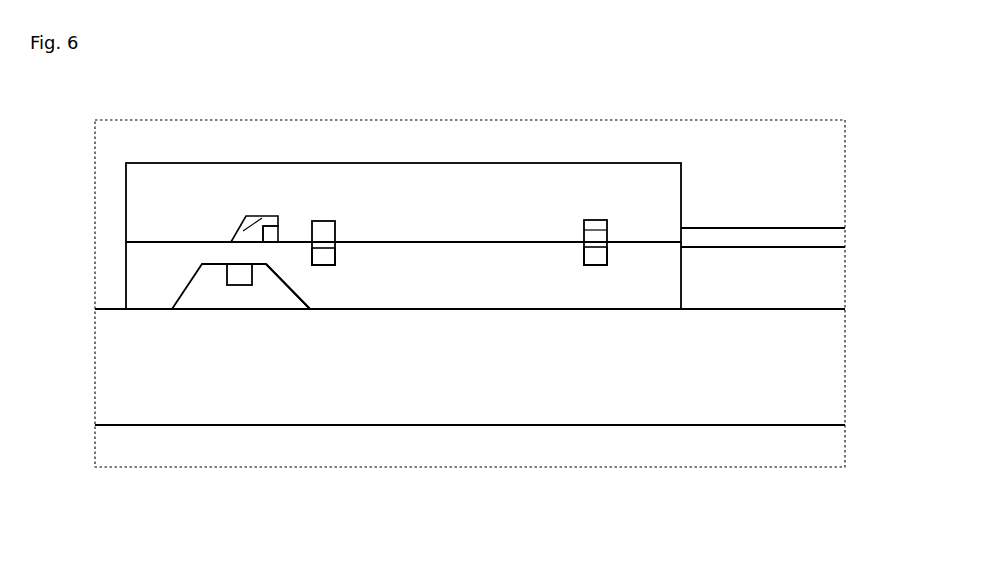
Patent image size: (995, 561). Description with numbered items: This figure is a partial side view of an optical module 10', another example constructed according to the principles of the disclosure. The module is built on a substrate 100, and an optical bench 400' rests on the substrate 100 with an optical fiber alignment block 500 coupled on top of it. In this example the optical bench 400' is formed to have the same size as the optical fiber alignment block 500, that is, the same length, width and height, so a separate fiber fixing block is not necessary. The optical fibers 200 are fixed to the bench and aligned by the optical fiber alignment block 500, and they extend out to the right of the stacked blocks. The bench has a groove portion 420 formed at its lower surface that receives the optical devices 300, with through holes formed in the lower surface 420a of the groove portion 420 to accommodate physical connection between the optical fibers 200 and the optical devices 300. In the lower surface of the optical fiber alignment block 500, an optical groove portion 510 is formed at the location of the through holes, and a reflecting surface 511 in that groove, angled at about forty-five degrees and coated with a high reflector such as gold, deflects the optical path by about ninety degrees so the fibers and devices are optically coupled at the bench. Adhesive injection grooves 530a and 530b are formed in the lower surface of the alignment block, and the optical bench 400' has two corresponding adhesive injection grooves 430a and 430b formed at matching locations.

The optical module 10' is at (443, 270).
The substrate 100 is at (192, 410).
The optical fibers 200 is at (603, 240).
The optical devices 300 is at (222, 279).
The optical bench 400' is at (403, 384).
The groove portion 420 is at (210, 297).
The lower surface of the groove portion 420a is at (266, 266).
The adhesive injection groove 430a is at (323, 266).
The adhesive injection groove 430b is at (595, 266).
The optical fiber alignment block 500 is at (402, 163).
The optical groove portion 510 is at (271, 226).
The reflecting surface 511 is at (266, 217).
The adhesive injection groove 530a is at (325, 221).
The adhesive injection groove 530b is at (595, 220).